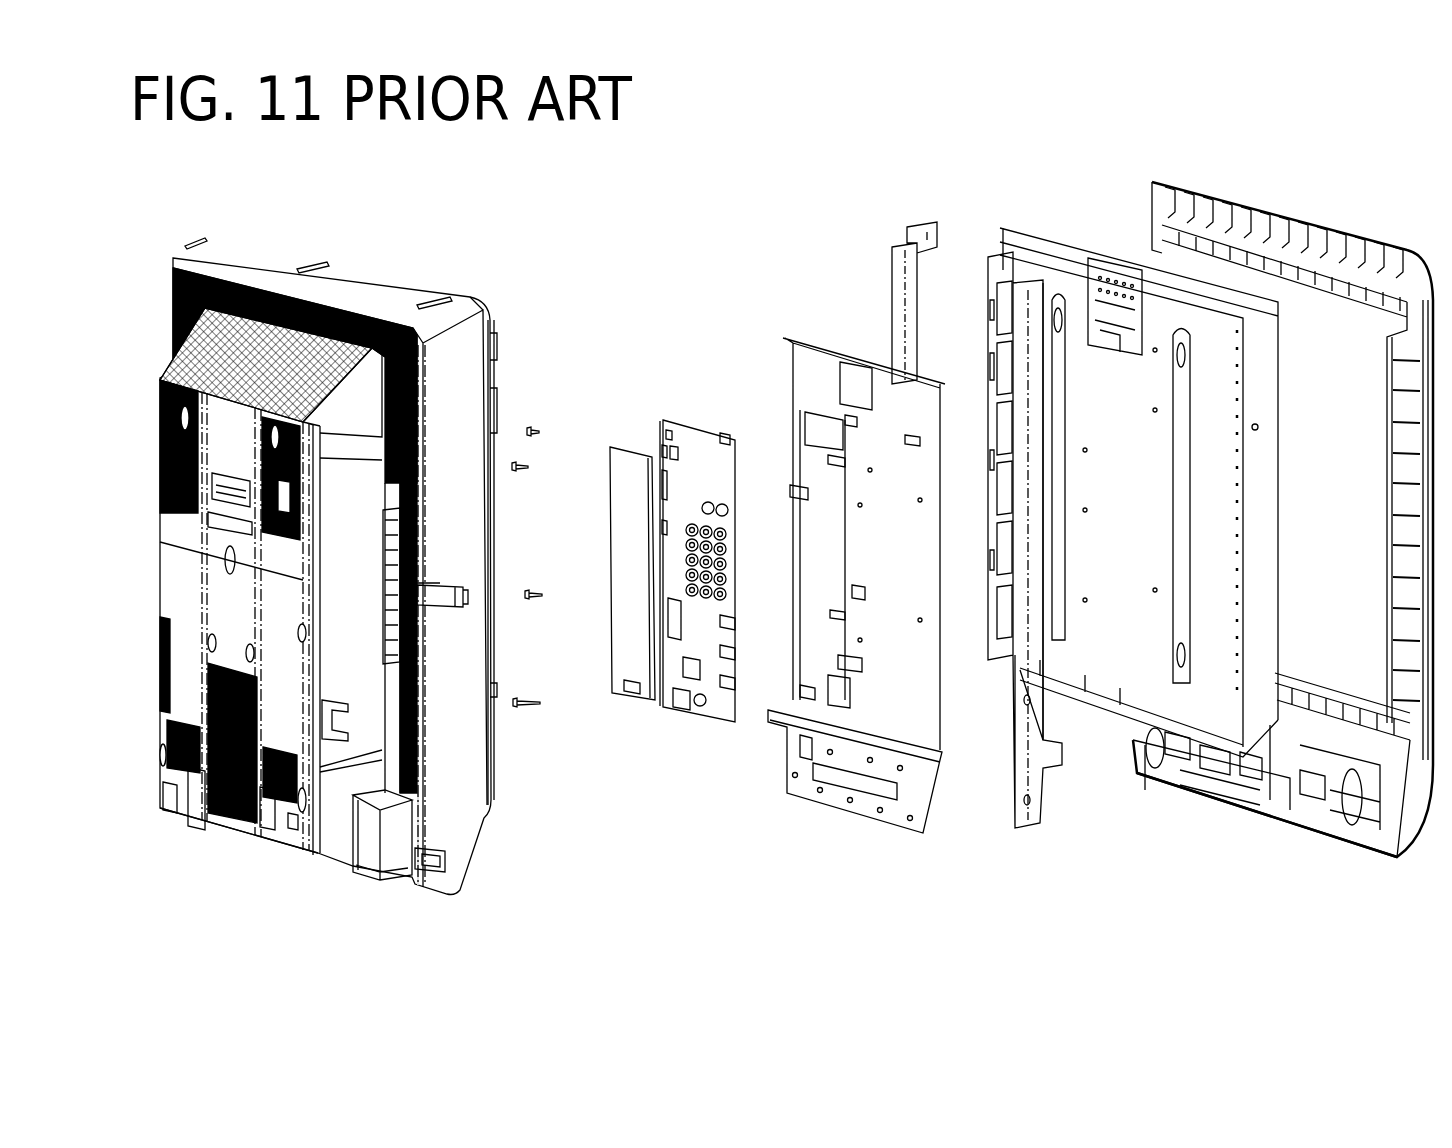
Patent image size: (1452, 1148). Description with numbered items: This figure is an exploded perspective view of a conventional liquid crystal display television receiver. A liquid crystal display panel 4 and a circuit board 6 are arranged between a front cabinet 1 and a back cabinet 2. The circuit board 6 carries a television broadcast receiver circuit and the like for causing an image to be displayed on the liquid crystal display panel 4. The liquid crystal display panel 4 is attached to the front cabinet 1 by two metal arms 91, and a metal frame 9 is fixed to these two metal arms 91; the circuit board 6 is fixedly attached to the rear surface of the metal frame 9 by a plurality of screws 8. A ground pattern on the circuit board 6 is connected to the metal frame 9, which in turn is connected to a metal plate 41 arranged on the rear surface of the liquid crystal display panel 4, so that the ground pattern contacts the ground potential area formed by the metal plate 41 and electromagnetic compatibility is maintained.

The front cabinet 1 is at (1333, 237).
The back cabinet 2 is at (373, 272).
The liquid crystal display panel 4 is at (1277, 498).
The circuit board 6 is at (687, 646).
The screws 8 is at (533, 423).
The metal frame 9 is at (813, 637).
The metal plate 41 is at (1098, 665).
The metal arms 91 is at (897, 277).